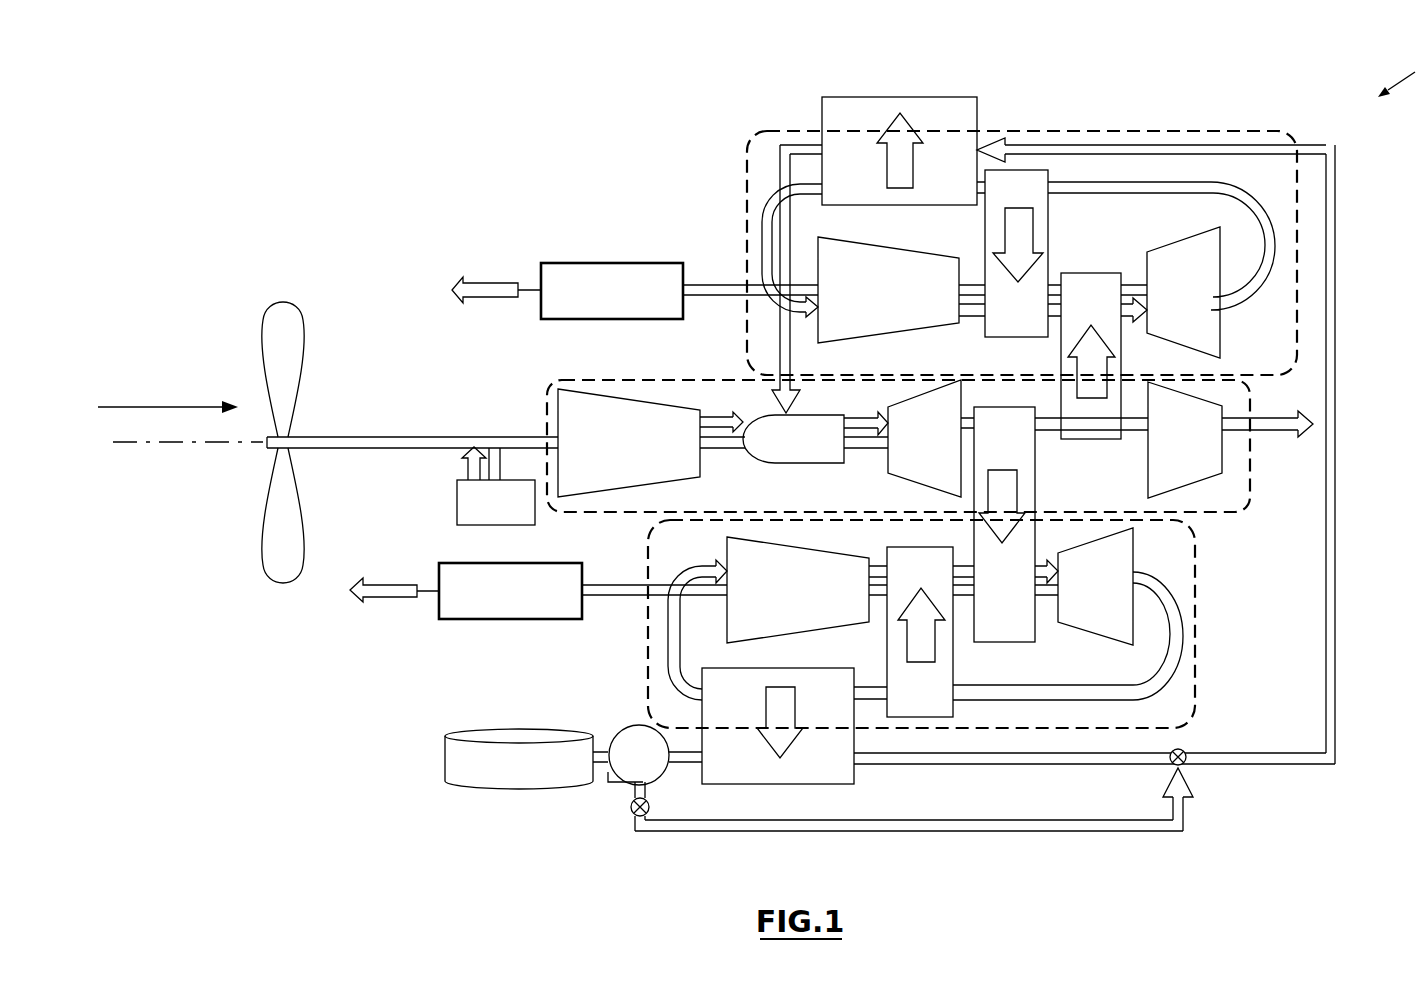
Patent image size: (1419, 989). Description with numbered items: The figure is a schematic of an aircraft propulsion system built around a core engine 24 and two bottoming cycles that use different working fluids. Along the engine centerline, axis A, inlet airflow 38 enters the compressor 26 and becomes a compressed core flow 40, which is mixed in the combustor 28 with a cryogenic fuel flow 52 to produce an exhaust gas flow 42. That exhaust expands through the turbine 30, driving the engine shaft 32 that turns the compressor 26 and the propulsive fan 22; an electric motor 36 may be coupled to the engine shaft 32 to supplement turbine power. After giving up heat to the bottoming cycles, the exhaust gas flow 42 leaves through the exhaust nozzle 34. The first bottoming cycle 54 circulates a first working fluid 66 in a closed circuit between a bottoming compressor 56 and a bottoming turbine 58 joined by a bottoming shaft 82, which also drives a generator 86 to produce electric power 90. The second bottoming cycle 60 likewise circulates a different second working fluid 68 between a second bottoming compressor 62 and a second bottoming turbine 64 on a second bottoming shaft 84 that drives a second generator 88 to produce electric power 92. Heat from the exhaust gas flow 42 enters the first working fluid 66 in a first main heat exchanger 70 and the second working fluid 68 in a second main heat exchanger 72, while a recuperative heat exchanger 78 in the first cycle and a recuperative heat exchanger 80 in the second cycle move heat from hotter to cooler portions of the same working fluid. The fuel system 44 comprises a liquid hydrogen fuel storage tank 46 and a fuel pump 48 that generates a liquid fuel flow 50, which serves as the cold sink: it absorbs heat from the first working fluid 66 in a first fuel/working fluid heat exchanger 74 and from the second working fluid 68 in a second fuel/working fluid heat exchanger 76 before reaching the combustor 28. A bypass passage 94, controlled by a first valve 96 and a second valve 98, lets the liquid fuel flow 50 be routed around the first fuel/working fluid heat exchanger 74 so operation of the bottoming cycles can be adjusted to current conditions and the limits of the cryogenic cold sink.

The propulsive fan 22 is at (270, 322).
The core engine 24 is at (547, 393).
The compressor 26 is at (648, 482).
The combustor 28 is at (778, 463).
The turbine 30 is at (888, 470).
The engine shaft 32 is at (364, 437).
The exhaust nozzle 34 is at (1148, 453).
The electric motor 36 is at (457, 508).
The inlet airflow 38 is at (137, 407).
The compressed core flow 40 is at (722, 415).
The exhaust gas flow 42 is at (858, 420).
The fuel system 44 is at (450, 830).
The liquid hydrogen fuel storage tank 46 is at (555, 780).
The fuel pump 48 is at (632, 772).
The liquid fuel flow 50 is at (948, 766).
The cryogenic fuel flow 52 is at (780, 368).
The first bottoming cycle 54 is at (636, 636).
The bottoming compressor 56 is at (795, 636).
The bottoming turbine 58 is at (1078, 628).
The second bottoming cycle 60 is at (735, 154).
The second bottoming compressor 62 is at (896, 248).
The second bottoming turbine 64 is at (1160, 250).
The first working fluid 66 is at (668, 695).
The second working fluid 68 is at (762, 222).
The first main heat exchanger 70 is at (1035, 462).
The second main heat exchanger 72 is at (1062, 343).
The first fuel/working fluid heat exchanger 74 is at (792, 771).
The second fuel/working fluid heat exchanger 76 is at (977, 112).
The recuperative heat exchanger 78 is at (905, 705).
The recuperative heat exchanger 80 is at (1034, 328).
The bottoming shaft 82 is at (623, 583).
The second bottoming shaft 84 is at (722, 285).
The generator 86 is at (468, 619).
The second generator 88 is at (570, 263).
The electric power 90 is at (382, 598).
The electric power 92 is at (483, 290).
The bypass passage 94 is at (888, 832).
The first valve 96 is at (635, 850).
The second valve 98 is at (1196, 774).
The axis A is at (172, 442).